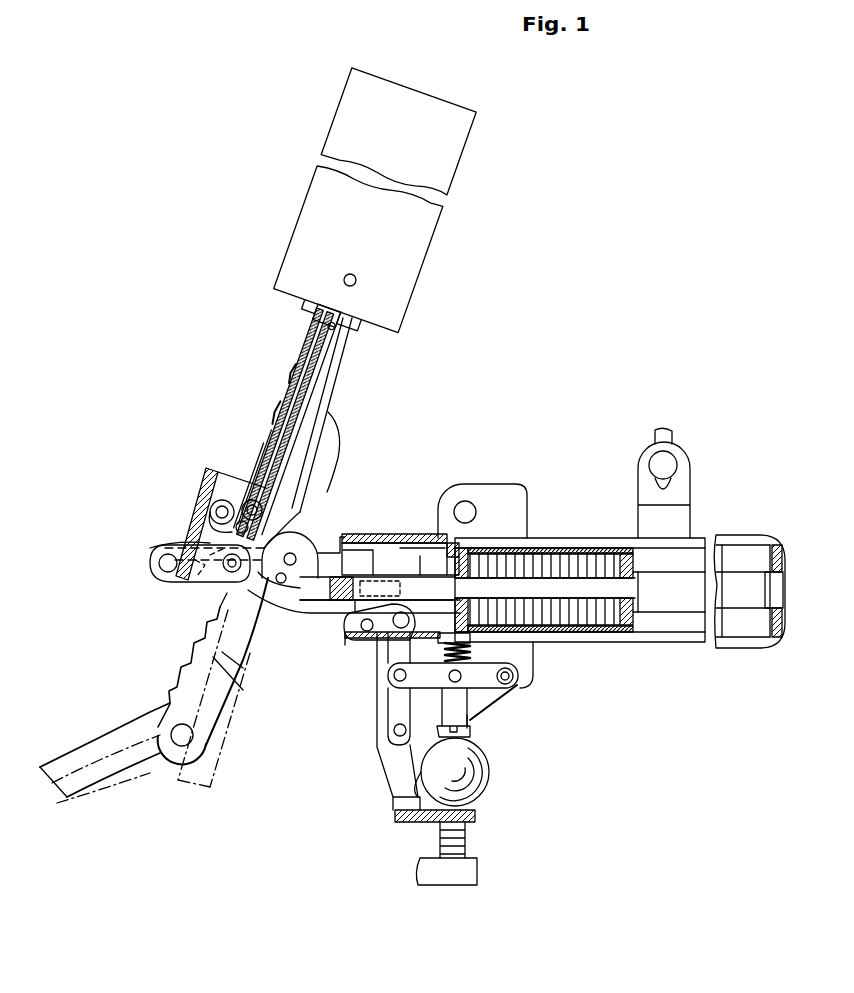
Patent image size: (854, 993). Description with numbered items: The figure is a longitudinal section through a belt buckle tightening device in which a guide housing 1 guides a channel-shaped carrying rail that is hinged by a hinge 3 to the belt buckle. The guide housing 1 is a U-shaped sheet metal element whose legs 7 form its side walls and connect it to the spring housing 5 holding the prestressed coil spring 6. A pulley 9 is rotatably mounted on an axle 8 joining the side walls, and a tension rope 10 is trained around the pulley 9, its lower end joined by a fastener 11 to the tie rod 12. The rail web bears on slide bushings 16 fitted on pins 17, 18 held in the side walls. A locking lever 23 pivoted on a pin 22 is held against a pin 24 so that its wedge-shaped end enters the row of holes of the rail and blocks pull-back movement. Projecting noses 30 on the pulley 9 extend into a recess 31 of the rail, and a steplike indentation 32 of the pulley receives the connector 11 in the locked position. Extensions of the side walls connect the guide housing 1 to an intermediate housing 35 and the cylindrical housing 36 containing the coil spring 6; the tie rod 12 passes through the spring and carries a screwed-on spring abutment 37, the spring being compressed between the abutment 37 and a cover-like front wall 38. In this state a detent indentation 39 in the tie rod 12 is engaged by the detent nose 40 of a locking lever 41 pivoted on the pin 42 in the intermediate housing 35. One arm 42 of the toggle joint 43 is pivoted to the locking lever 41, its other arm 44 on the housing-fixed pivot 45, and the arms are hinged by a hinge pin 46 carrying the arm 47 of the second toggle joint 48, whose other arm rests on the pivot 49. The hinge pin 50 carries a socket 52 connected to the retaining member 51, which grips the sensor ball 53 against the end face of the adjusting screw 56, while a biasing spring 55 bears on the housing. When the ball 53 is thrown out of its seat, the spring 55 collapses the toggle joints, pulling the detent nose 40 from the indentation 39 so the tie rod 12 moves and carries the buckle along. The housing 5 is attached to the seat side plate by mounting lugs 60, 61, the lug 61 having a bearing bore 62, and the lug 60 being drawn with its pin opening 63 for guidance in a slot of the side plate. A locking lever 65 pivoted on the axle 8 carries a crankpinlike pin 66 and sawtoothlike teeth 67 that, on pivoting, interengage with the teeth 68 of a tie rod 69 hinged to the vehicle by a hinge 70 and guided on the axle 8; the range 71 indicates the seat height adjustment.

The guide housing 1 is at (204, 478).
The hinge 3 is at (356, 281).
The spring housing 5 is at (597, 535).
The coil spring 6 is at (603, 634).
The legs 7 is at (333, 530).
The axle 8 is at (300, 540).
The pulley 9 is at (292, 602).
The tension rope 10 is at (325, 380).
The fastener 11 is at (312, 602).
The tie rod 12 is at (590, 562).
The slide bushings 16 is at (249, 500).
The pin 17 is at (256, 500).
The pin 18 is at (232, 574).
The pin 22 is at (221, 500).
The locking lever 23 is at (200, 546).
The pin 24 is at (236, 527).
The projecting noses 30 is at (246, 605).
The recess 31 is at (150, 548).
The steplike indentation 32 is at (338, 560).
The intermediate housing 35 is at (402, 533).
The cylindrical housing 36 is at (545, 548).
The spring abutment 37 is at (630, 622).
The front wall 38 is at (450, 545).
The detent indentation 39 is at (432, 598).
The detent nose 40 is at (383, 600).
The locking lever 41 is at (370, 540).
The arm of the toggle joint 42 is at (343, 635).
The toggle joint 43 is at (385, 682).
The arm of the toggle joint 44 is at (392, 710).
The pivot 45 is at (392, 730).
The hinge pin 46 is at (388, 678).
The arm of the second toggle joint 47 is at (393, 650).
The second toggle joint 48 is at (492, 685).
The pivot 49 is at (516, 678).
The hinge pin 50 is at (462, 673).
The retaining member 51 is at (460, 702).
The socket 52 is at (472, 732).
The sensor ball 53 is at (473, 763).
The biasing spring 55 is at (432, 643).
The adjusting screw 56 is at (440, 840).
The mounting lug 60 is at (690, 494).
The mounting lug 61 is at (510, 492).
The bearing bore 62 is at (465, 501).
The hole 63 is at (672, 465).
The locking lever 65 is at (152, 557).
The crankpinlike pin 66 is at (268, 592).
The sawtoothlike teeth 67 is at (185, 585).
The teeth 68 is at (205, 650).
The tie rod 69 is at (247, 680).
The hinge 70 is at (195, 738).
The range for adjustment in height 71 is at (104, 742).